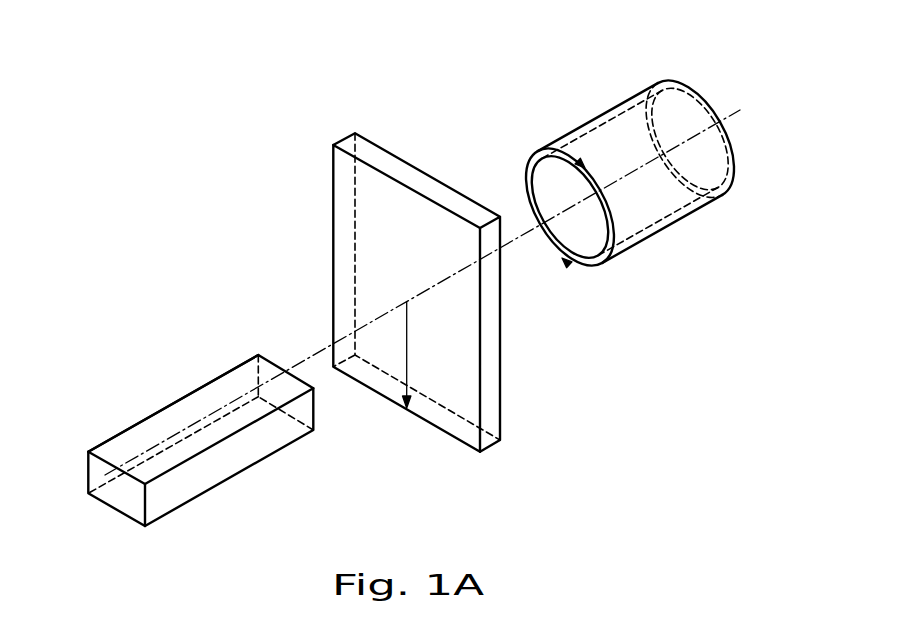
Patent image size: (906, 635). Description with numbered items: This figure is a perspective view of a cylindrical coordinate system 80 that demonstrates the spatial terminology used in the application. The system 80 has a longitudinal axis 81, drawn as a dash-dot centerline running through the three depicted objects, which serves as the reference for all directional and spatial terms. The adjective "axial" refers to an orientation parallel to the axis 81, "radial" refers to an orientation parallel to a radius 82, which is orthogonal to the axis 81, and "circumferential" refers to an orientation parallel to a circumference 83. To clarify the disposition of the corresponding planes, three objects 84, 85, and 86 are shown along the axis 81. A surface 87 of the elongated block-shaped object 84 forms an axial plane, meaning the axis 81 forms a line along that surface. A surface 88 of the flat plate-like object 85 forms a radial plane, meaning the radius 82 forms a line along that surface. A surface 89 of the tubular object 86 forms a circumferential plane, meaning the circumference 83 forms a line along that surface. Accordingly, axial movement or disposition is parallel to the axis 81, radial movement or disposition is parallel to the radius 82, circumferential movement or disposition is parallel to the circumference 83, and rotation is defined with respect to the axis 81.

The cylindrical coordinate system 80 is at (292, 166).
The longitudinal axis 81 is at (720, 118).
The radius 82 is at (407, 350).
The circumference 83 is at (525, 180).
The object 84 is at (180, 508).
The object 85 is at (508, 445).
The object 86 is at (670, 230).
The surface 87 is at (152, 420).
The surface 88 is at (342, 272).
The surface 89 is at (597, 117).